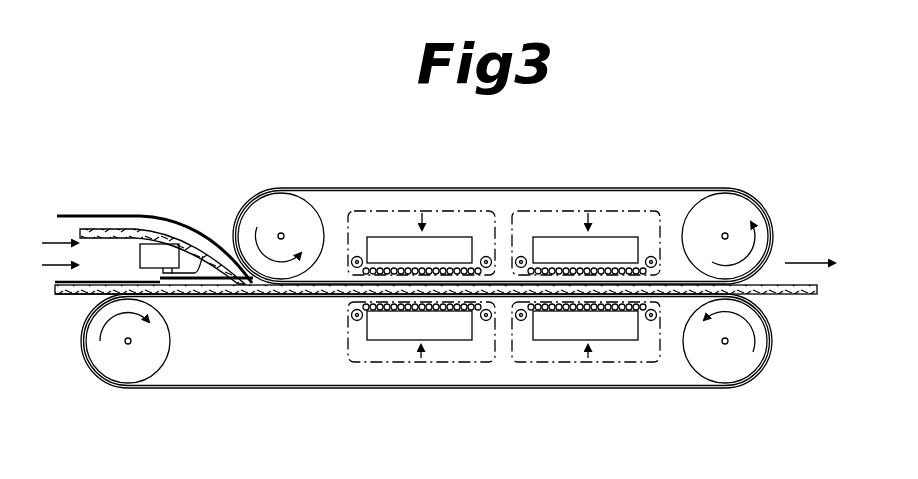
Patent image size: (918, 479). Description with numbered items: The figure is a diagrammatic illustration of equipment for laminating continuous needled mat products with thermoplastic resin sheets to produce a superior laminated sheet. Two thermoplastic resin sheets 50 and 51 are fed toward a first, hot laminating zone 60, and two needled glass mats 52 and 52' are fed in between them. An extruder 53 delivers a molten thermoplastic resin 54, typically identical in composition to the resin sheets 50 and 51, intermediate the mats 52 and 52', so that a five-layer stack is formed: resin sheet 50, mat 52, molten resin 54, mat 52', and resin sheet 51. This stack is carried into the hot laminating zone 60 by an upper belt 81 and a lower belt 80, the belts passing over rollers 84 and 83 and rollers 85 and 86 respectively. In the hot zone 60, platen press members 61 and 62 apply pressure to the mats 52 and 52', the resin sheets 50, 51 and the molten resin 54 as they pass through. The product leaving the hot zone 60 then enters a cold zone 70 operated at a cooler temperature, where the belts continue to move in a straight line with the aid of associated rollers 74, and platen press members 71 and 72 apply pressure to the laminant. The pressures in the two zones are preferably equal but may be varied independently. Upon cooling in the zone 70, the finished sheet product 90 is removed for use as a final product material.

The thermoplastic resin sheet 50 is at (118, 212).
The thermoplastic resin sheet 51 is at (70, 300).
The needled mat 52 is at (162, 256).
The needled mat 52' is at (107, 274).
The extruder 53 is at (159, 258).
The molten thermoplastic resin 54 is at (203, 256).
The first laminating zone 60 is at (421, 233).
The platen press member 61 is at (413, 261).
The platen press member 62 is at (448, 339).
The cold zone 70 is at (586, 233).
The platen press member 71 is at (580, 261).
The platen press member 72 is at (550, 339).
The rollers 74 is at (592, 311).
The belt 80 is at (212, 388).
The belt 81 is at (648, 188).
The roller 83 is at (742, 370).
The roller 84 is at (112, 370).
The roller 85 is at (752, 208).
The roller 86 is at (267, 200).
The finished sheet product 90 is at (800, 300).